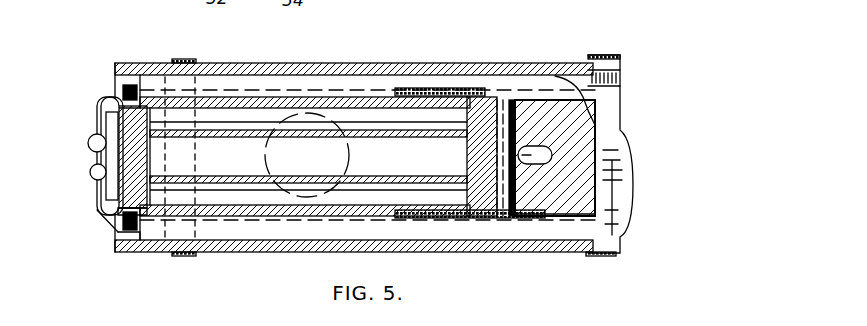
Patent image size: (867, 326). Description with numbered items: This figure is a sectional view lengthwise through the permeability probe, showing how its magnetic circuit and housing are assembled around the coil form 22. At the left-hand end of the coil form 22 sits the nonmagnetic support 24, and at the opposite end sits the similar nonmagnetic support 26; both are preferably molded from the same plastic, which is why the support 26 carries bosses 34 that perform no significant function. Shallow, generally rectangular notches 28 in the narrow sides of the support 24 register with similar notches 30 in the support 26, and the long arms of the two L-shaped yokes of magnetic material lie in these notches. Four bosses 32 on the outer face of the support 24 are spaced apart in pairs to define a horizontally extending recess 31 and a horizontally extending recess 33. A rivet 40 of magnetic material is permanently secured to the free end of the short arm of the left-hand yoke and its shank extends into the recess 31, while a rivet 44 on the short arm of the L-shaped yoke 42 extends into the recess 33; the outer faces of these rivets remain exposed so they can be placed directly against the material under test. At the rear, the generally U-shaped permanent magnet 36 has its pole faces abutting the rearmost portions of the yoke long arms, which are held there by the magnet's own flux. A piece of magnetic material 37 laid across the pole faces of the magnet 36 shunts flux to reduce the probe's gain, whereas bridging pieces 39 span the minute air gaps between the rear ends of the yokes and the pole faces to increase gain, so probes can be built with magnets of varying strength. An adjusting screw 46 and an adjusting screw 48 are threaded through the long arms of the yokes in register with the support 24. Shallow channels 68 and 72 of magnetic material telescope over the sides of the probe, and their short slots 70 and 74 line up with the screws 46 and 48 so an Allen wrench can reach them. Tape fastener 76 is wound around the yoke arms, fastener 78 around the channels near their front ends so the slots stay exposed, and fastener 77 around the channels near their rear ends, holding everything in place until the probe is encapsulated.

The coil form 22 is at (468, 190).
The nonmagnetic support 24 is at (105, 215).
The nonmagnetic support 26 is at (500, 97).
The notches 28 is at (143, 88).
The notches 30 is at (475, 97).
The recess 31 is at (105, 125).
The bosses 32 is at (100, 105).
The recess 33 is at (100, 190).
The bosses 34 is at (530, 103).
The permanent magnet 36 is at (594, 192).
The piece of magnetic material 37 is at (535, 155).
The bridging pieces of magnetic material 39 is at (520, 100).
The rivet 40 is at (86, 143).
The L-shaped yoke 42 is at (110, 210).
The rivet 44 is at (88, 170).
The adjusting screw 46 is at (118, 88).
The adjusting screw 48 is at (107, 223).
The shallow channel 68 is at (328, 63).
The slot 70 is at (150, 70).
The shallow channel 72 is at (268, 252).
The slot 74 is at (152, 243).
The fastener 76 is at (430, 88).
The fastener 77 is at (592, 253).
The fastener 78 is at (196, 256).